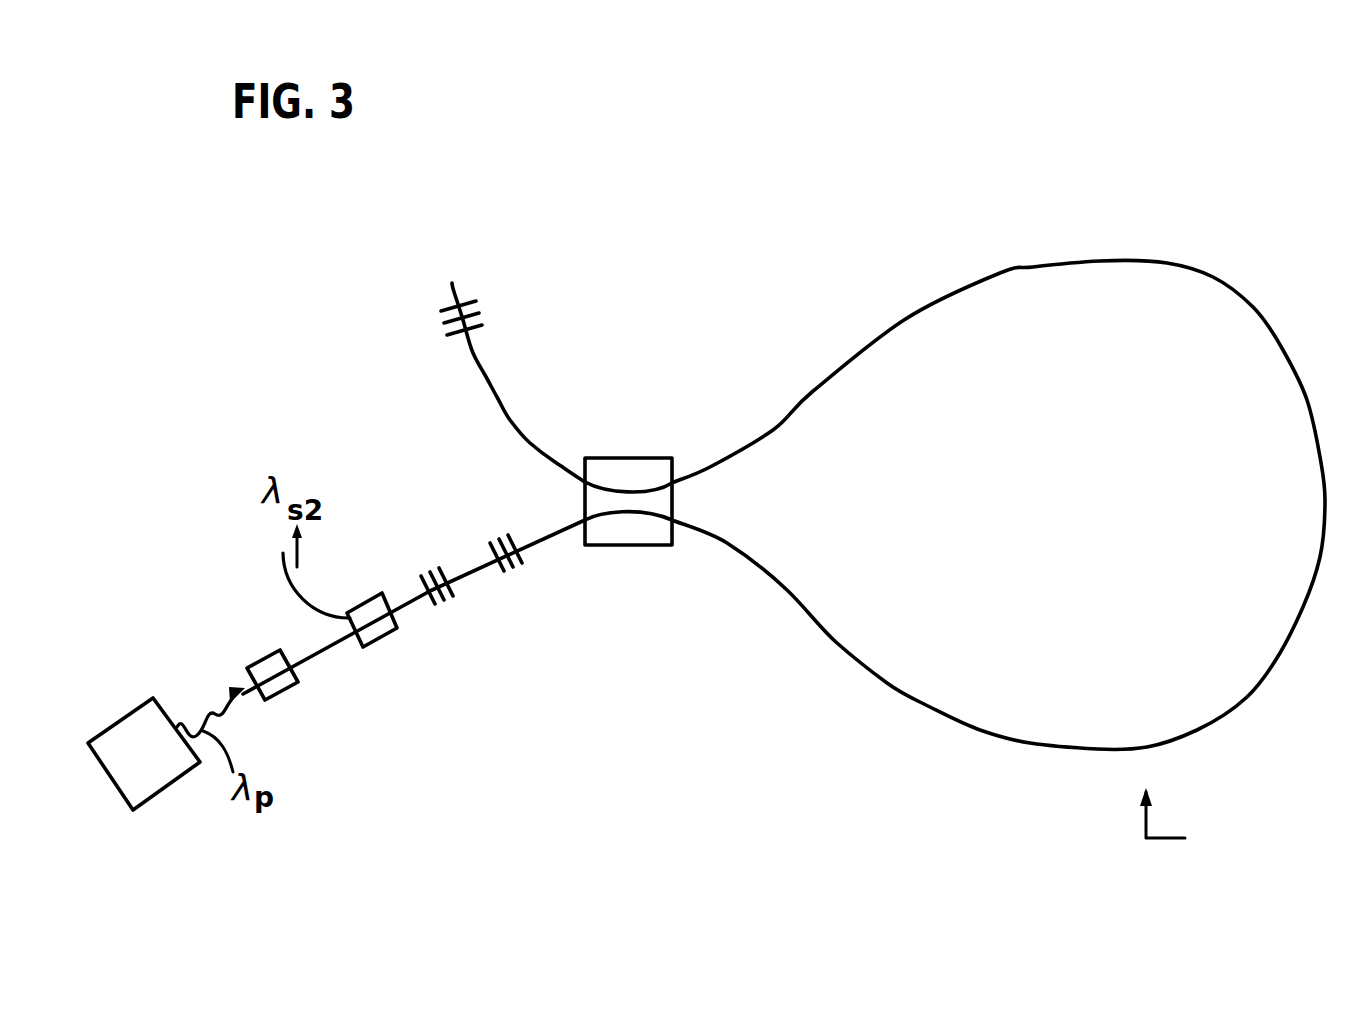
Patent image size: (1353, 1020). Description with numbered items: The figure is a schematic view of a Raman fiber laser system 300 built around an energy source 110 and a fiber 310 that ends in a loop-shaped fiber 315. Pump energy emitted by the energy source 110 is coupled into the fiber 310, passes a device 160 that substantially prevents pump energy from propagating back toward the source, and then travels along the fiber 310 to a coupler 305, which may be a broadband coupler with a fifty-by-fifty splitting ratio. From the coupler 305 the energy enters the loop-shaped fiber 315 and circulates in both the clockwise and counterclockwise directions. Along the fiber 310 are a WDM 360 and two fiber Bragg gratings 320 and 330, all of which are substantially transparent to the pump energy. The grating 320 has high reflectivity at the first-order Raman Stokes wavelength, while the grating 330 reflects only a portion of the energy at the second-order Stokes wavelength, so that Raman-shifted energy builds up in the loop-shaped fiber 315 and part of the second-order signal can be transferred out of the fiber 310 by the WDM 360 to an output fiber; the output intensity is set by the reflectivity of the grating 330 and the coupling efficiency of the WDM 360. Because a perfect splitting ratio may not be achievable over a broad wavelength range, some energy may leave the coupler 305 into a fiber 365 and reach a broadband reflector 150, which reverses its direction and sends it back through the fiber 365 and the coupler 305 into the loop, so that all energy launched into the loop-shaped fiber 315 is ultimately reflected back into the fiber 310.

The energy source 110 is at (168, 773).
The device 160 is at (265, 660).
The fiber 310 is at (320, 655).
The WDM 360 is at (371, 598).
The fiber Bragg grating 320 is at (442, 607).
The fiber Bragg grating 330 is at (506, 569).
The coupler 305 is at (629, 456).
The fiber 365 is at (497, 388).
The broadband reflector 150 is at (473, 304).
The loop-shaped fiber 315 is at (1108, 259).
The Raman fiber laser system 300 is at (1250, 855).